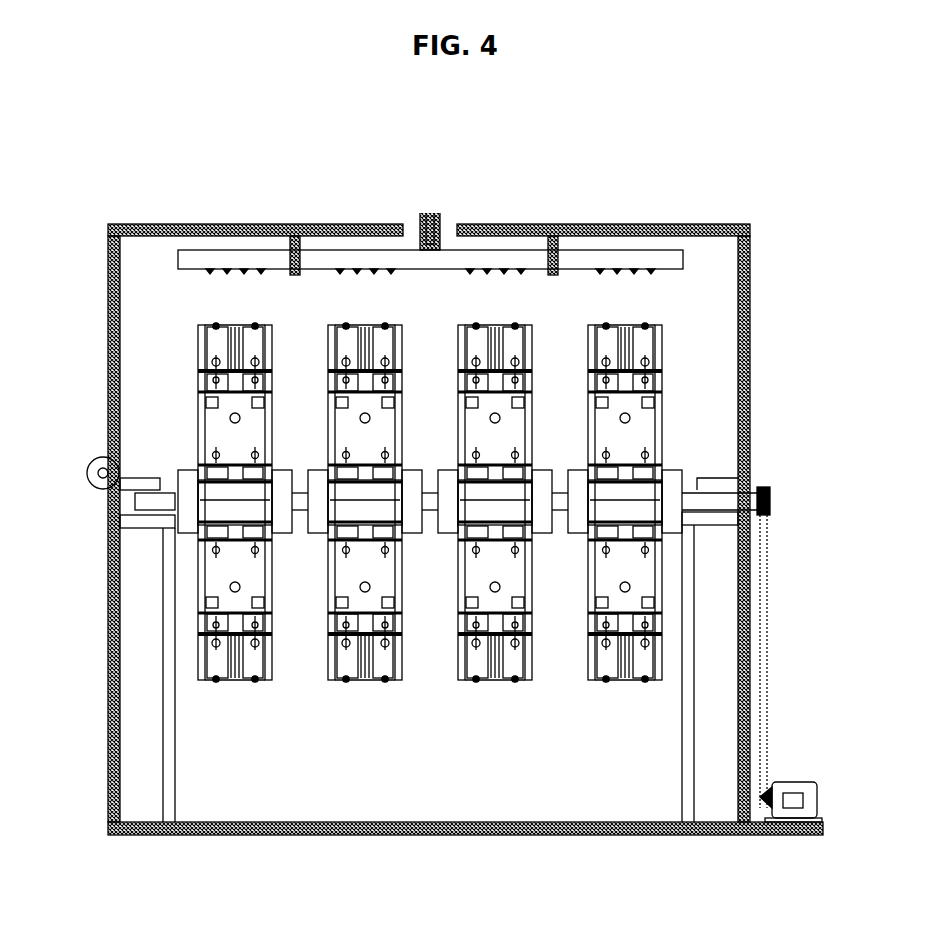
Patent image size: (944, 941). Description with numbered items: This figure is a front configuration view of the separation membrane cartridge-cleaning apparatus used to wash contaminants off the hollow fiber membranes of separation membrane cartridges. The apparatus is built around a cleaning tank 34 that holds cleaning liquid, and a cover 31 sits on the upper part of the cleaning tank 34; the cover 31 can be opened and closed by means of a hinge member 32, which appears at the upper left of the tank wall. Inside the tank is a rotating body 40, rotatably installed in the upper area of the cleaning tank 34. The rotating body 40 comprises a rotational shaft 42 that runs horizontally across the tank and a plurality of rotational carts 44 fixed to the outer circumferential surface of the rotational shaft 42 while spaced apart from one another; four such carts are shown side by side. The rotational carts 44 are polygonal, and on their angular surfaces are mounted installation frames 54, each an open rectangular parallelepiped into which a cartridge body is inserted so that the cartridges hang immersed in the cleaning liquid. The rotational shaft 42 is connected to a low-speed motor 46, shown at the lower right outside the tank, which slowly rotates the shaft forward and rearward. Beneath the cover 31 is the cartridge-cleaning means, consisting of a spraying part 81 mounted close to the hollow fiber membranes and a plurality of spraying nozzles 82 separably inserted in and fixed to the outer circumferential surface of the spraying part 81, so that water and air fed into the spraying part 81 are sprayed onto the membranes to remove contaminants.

The cover 31 is at (643, 224).
The hinge member 32 is at (101, 457).
The cleaning tank 34 is at (540, 835).
The rotating body 40 is at (444, 502).
The rotational shaft 42 is at (705, 518).
The rotational cart 44 is at (444, 502).
The low-speed motor 46 is at (793, 782).
The installation frame 54 is at (615, 325).
The spraying part 81 is at (253, 268).
The spraying nozzle 82 is at (212, 270).